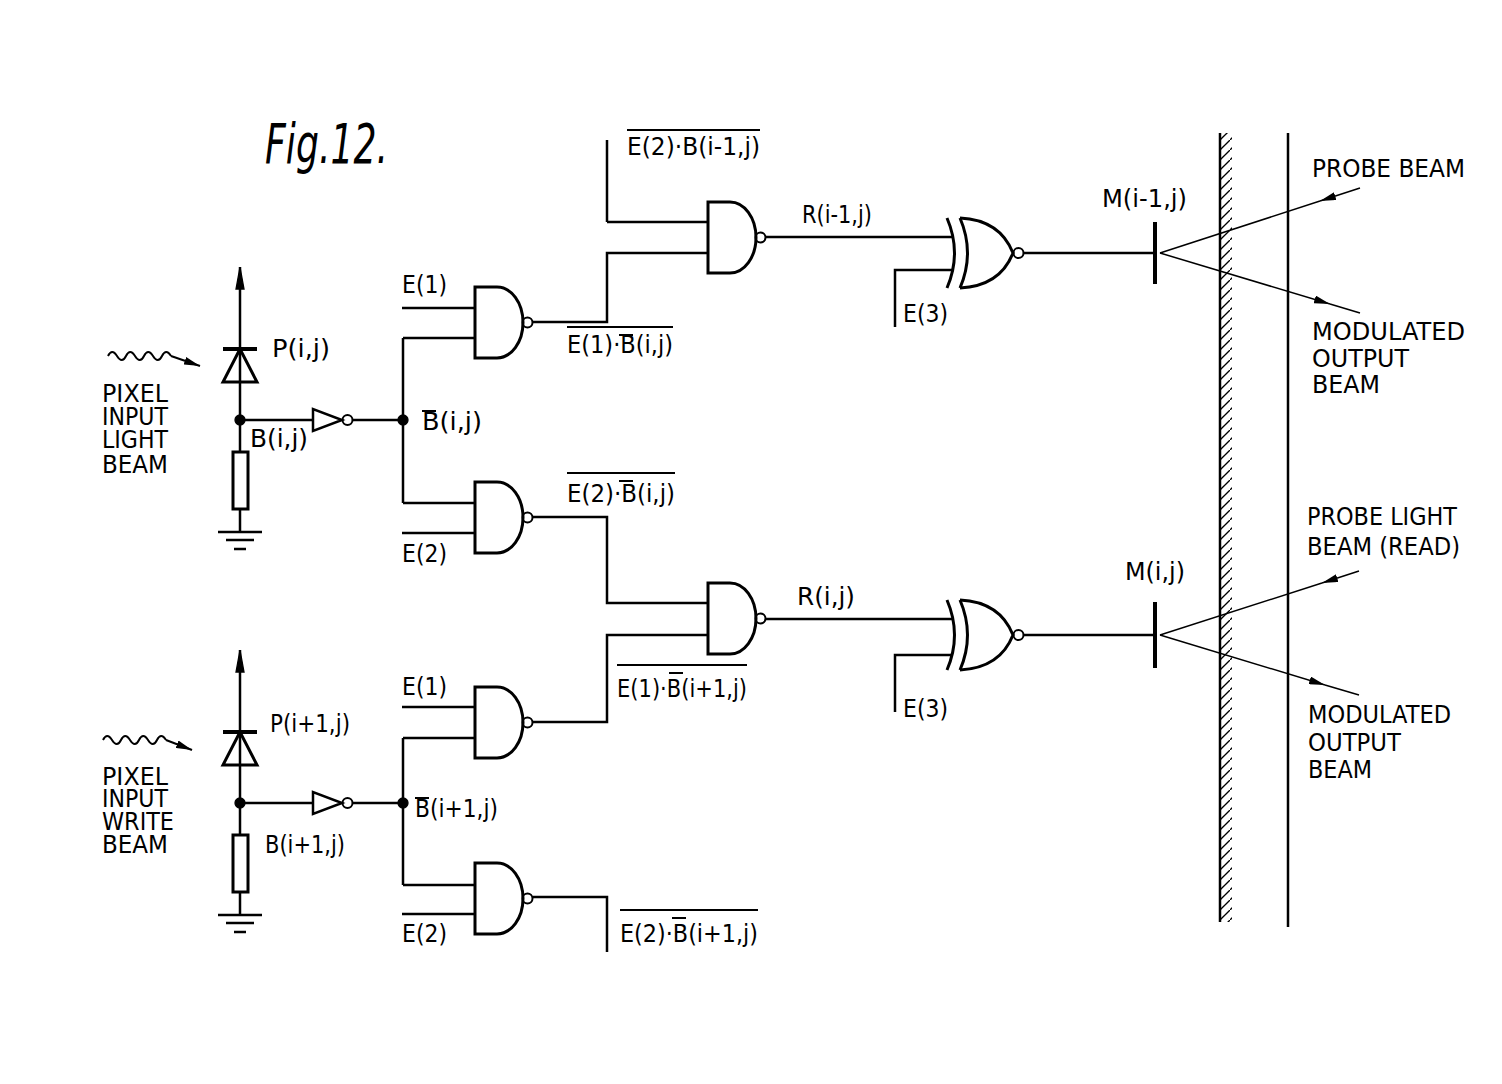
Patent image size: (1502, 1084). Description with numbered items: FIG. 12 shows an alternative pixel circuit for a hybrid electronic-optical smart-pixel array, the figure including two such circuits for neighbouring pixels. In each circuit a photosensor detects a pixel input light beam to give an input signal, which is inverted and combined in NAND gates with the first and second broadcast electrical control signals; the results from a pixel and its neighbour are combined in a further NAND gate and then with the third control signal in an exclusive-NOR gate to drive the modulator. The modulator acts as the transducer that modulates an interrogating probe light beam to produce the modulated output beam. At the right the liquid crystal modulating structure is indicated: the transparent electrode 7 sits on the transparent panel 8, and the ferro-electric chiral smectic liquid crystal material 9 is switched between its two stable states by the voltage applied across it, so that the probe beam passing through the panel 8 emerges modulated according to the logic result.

The transparent electrode 7 is at (1227, 130).
The transparent panel 8 is at (1265, 156).
The ferro-electric chiral smectic liquid crystal material 9 is at (1190, 301).